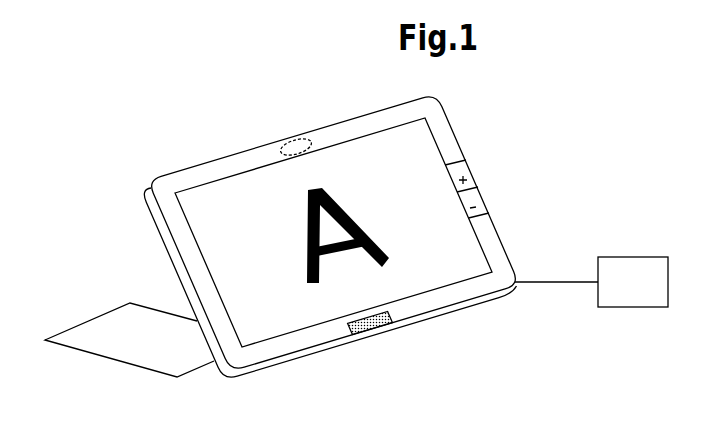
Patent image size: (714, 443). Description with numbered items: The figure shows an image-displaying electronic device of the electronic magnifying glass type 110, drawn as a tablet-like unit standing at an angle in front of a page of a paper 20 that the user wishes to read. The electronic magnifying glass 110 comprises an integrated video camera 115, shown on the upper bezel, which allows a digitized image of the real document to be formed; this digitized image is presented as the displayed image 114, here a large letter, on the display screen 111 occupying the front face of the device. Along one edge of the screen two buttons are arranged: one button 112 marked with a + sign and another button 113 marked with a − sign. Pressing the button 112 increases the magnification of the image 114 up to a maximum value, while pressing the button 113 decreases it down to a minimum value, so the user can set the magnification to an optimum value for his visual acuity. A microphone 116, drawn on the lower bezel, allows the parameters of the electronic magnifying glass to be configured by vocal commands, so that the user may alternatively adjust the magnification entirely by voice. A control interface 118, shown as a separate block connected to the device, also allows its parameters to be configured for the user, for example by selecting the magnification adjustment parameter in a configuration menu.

The electronic magnifying glass 110 is at (491, 130).
The display screen 111 is at (220, 202).
The button marked + 112 is at (473, 182).
The button marked − 113 is at (482, 216).
The displayed image 114 is at (387, 253).
The integrated video camera 115 is at (303, 142).
The microphone 116 is at (348, 331).
The control interface 118 is at (652, 296).
The paper 20 is at (97, 317).